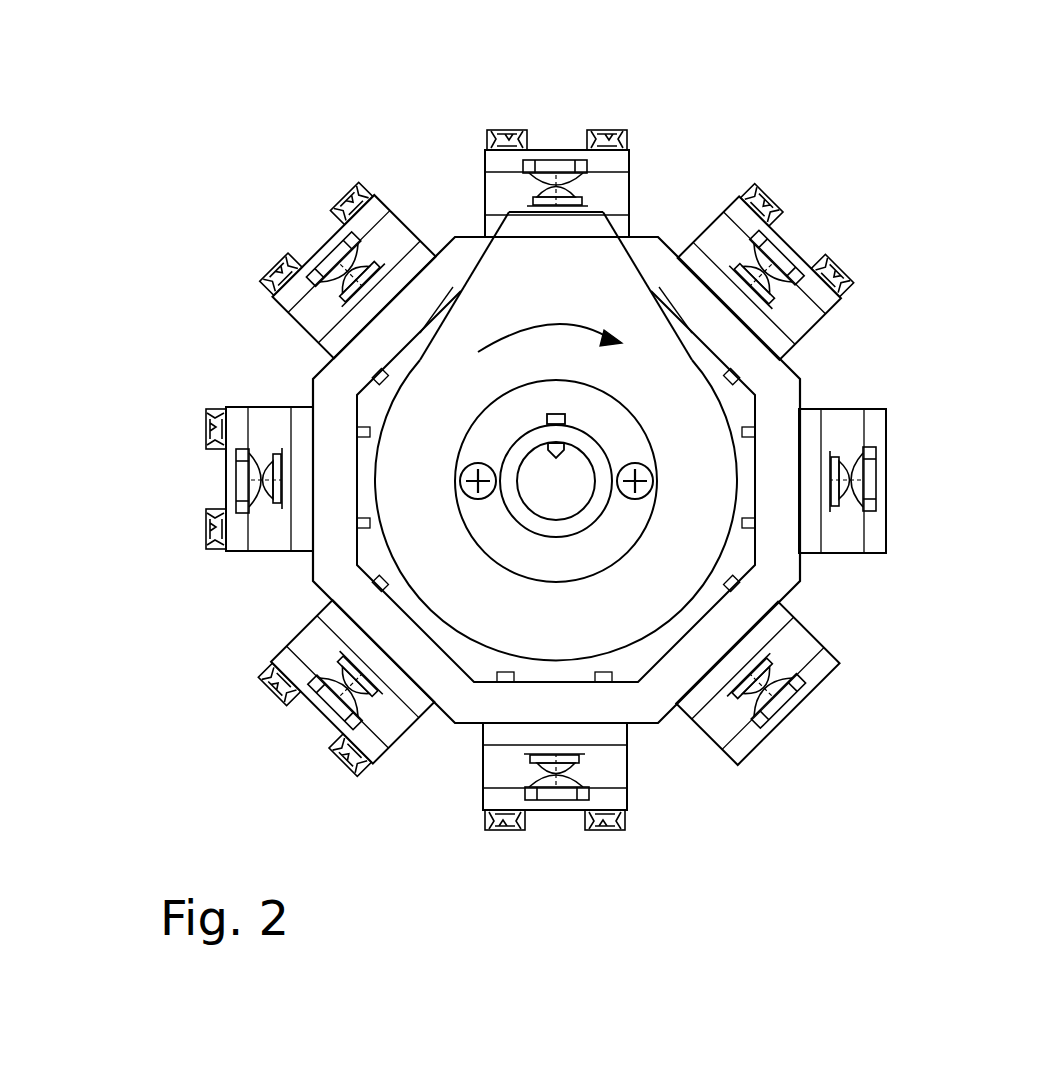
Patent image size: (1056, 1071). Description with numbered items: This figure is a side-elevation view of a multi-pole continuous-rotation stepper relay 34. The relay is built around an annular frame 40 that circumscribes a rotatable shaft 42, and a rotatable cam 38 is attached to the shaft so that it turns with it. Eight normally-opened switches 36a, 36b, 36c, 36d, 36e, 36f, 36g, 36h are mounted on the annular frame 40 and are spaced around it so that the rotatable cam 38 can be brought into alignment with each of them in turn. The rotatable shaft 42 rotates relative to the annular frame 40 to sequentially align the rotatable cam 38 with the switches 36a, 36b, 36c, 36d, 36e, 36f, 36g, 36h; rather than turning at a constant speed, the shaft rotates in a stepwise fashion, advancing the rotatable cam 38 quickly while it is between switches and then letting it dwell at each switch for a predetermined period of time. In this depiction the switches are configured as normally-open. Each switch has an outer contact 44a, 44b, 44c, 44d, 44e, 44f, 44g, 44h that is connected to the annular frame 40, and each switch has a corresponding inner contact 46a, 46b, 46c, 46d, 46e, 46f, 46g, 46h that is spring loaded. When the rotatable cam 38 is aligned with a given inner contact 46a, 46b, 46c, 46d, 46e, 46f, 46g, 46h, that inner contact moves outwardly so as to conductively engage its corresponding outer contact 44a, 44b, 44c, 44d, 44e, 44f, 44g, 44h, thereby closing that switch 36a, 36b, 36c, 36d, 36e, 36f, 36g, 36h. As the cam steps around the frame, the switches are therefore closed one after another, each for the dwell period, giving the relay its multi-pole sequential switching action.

The continuous-rotation stepper relay 34 is at (844, 116).
The normally-opened switch 36a is at (556, 112).
The normally-opened switch 36b is at (826, 216).
The normally-opened switch 36c is at (927, 468).
The normally-opened switch 36d is at (814, 718).
The normally-opened switch 36e is at (560, 842).
The normally-opened switch 36f is at (300, 736).
The normally-opened switch 36g is at (183, 468).
The normally-opened switch 36h is at (287, 216).
The rotatable cam 38 is at (556, 241).
The annular frame 40 is at (780, 408).
The rotatable shaft 42 is at (556, 481).
The outer contact 44a is at (570, 178).
The outer contact 44b is at (775, 288).
The outer contact 44c is at (850, 502).
The outer contact 44d is at (755, 708).
The outer contact 44e is at (535, 773).
The outer contact 44f is at (342, 675).
The outer contact 44g is at (252, 450).
The outer contact 44h is at (355, 250).
The inner contact 46a is at (537, 190).
The inner contact 46b is at (733, 280).
The inner contact 46c is at (823, 465).
The inner contact 46d is at (757, 662).
The inner contact 46e is at (563, 747).
The inner contact 46f is at (385, 688).
The inner contact 46g is at (297, 482).
The inner contact 46h is at (362, 292).